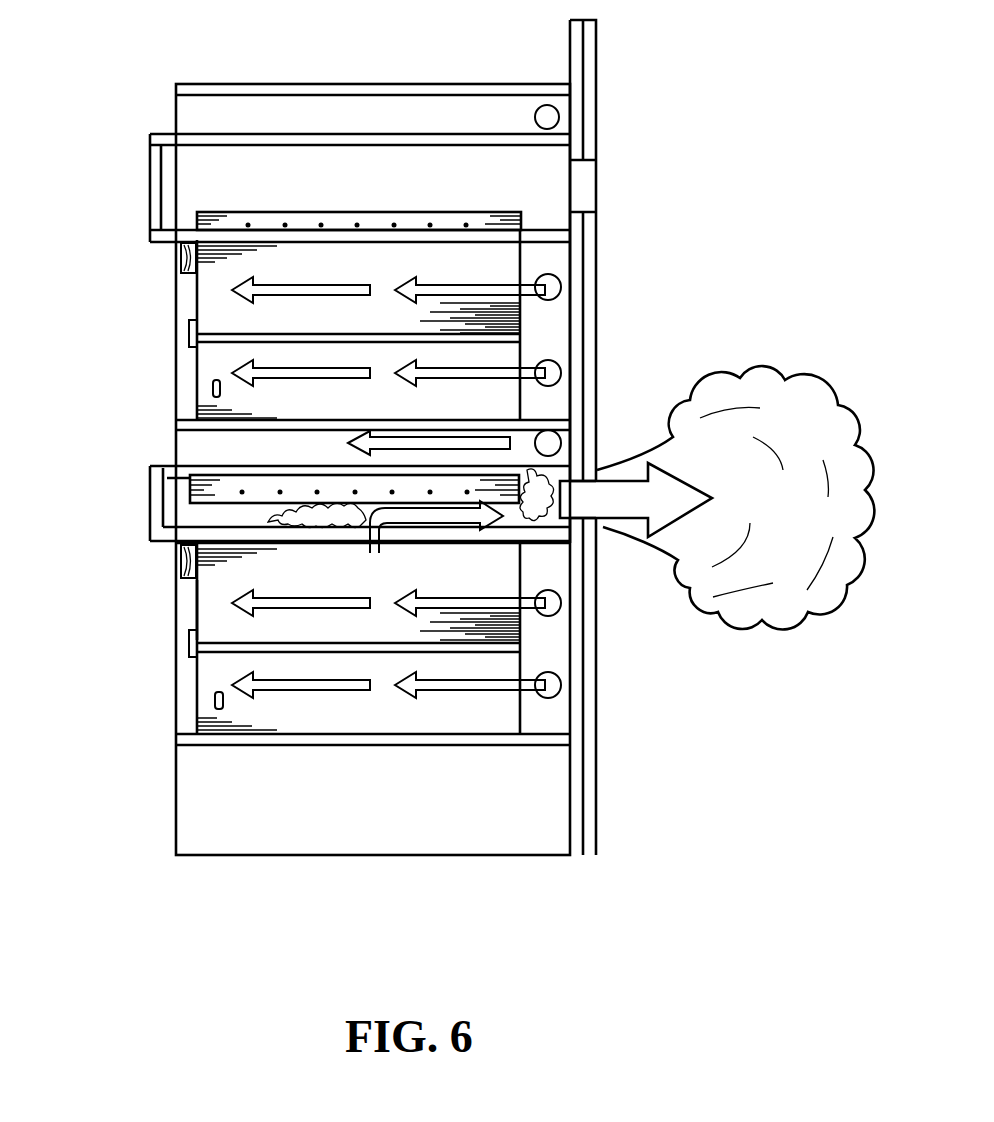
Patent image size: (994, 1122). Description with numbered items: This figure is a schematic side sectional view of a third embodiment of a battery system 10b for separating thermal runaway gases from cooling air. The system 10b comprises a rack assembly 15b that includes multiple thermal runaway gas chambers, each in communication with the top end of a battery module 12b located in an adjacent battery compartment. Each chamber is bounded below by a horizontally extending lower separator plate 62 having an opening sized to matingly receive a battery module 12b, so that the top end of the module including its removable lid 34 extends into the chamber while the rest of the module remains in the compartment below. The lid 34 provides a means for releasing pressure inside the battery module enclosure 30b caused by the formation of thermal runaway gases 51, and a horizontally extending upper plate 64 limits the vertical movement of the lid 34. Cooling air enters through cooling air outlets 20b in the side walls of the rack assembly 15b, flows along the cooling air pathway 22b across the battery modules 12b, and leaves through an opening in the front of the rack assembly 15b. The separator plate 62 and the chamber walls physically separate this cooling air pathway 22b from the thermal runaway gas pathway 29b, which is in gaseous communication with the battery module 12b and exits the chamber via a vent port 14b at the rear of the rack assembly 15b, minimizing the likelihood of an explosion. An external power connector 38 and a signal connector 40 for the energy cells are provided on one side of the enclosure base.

The battery system 10b is at (70, 22).
The battery module 12b is at (195, 380).
The vent port 14b is at (585, 182).
The rack assembly 15b is at (153, 208).
The cooling air outlet 20b is at (556, 678).
The cooling air pathway 22b is at (455, 443).
The thermal runaway gas pathway 29b is at (667, 502).
The battery module enclosure 30b is at (207, 608).
The removable lid 34 is at (272, 212).
The external power connector 38 is at (177, 560).
The signal connector 40 is at (185, 642).
The thermal runaway gases 51 is at (782, 603).
The lower separator plate 62 is at (165, 243).
The upper plate 64 is at (163, 133).